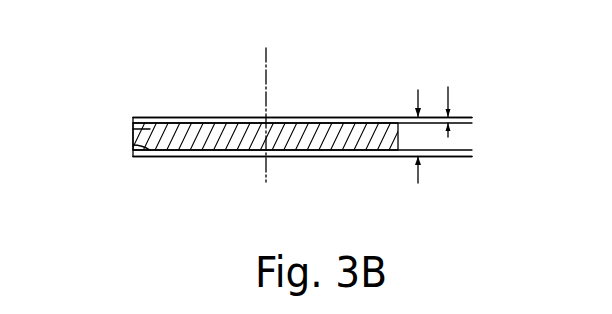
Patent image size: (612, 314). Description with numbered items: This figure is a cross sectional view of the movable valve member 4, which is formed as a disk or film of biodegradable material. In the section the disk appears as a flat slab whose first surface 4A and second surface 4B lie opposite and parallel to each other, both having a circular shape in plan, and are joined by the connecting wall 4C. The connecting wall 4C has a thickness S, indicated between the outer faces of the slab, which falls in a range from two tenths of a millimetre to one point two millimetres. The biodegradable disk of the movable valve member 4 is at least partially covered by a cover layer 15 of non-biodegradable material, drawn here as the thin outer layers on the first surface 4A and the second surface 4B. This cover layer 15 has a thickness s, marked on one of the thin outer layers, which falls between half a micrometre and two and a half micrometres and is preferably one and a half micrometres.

The movable valve member 4 is at (252, 129).
The first surface 4A is at (133, 157).
The second surface 4B is at (133, 118).
The connecting wall 4C is at (133, 137).
The cover layer 15 is at (293, 118).
The thickness of the connecting wall S is at (417, 100).
The thickness of the cover layer s is at (448, 97).